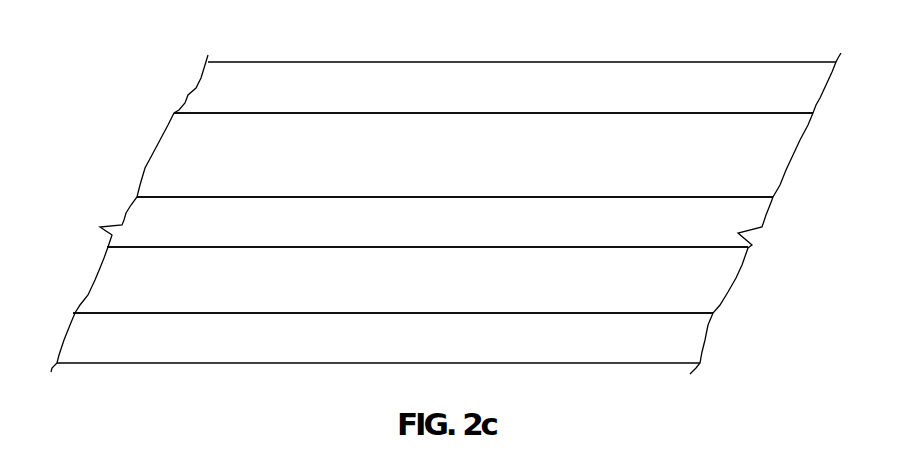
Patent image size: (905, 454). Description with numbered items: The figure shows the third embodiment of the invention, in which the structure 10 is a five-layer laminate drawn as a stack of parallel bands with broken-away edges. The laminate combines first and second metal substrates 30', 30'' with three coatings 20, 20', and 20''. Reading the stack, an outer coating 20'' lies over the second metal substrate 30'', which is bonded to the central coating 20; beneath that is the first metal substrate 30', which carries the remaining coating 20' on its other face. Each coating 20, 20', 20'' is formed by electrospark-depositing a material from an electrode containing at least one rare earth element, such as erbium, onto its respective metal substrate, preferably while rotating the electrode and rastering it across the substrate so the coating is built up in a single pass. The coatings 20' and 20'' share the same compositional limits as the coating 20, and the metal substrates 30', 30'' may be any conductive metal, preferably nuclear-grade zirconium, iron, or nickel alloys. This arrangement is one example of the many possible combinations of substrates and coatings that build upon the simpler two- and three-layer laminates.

The structure 10 is at (122, 87).
The coating 20'' is at (505, 87).
The second metal substrate 30'' is at (475, 155).
The coating 20 is at (440, 222).
The first metal substrate 30' is at (410, 280).
The coating 20' is at (385, 338).